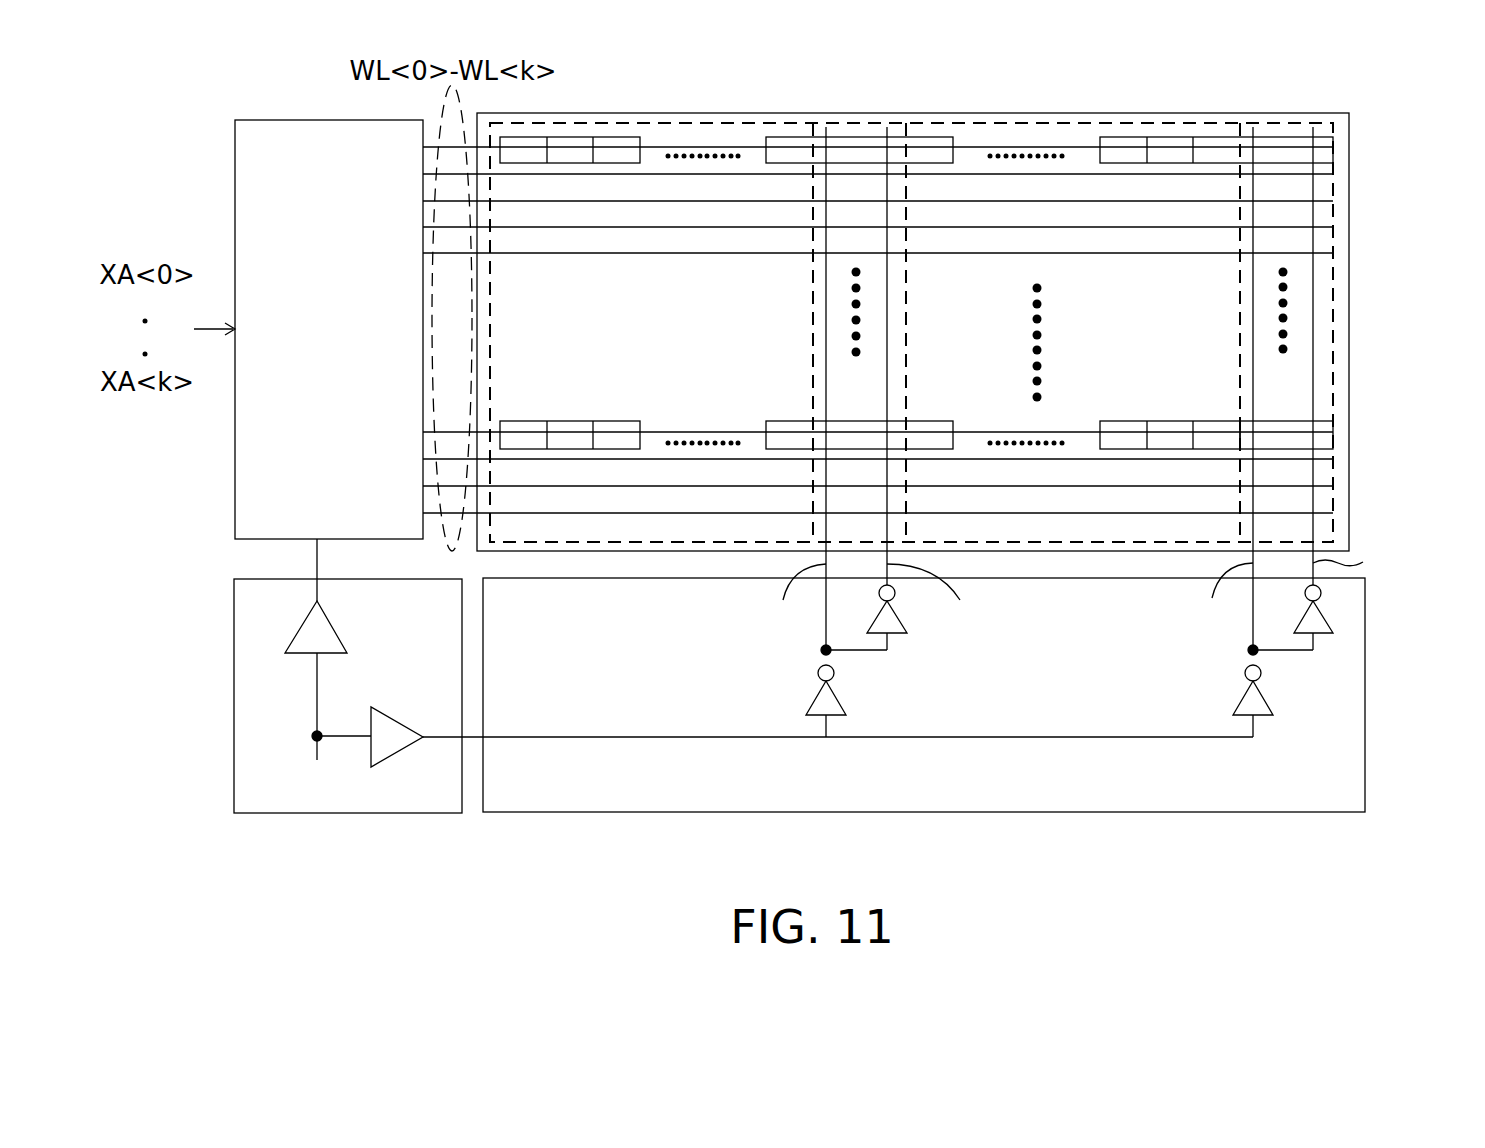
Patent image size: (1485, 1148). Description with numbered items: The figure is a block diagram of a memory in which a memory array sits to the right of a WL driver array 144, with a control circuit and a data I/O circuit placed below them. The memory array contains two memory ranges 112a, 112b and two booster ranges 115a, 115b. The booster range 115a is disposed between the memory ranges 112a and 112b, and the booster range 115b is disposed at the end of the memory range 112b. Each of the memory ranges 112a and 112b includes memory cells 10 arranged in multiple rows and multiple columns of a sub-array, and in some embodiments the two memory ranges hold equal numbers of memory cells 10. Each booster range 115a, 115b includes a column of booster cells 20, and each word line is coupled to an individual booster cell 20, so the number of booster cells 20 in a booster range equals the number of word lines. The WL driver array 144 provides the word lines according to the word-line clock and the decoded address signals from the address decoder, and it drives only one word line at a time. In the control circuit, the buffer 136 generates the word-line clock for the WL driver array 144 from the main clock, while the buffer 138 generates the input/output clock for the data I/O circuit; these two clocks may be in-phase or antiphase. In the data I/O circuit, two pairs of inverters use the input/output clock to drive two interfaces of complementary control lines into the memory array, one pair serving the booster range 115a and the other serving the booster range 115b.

The memory range 112a is at (648, 123).
The memory range 112b is at (1070, 123).
The booster range 115a is at (855, 123).
The booster range 115b is at (1284, 123).
The memory cell 10 is at (568, 420).
The booster cell 20 is at (853, 420).
The WL driver array 144 is at (235, 172).
The buffer 136 is at (330, 622).
The buffer 138 is at (400, 722).